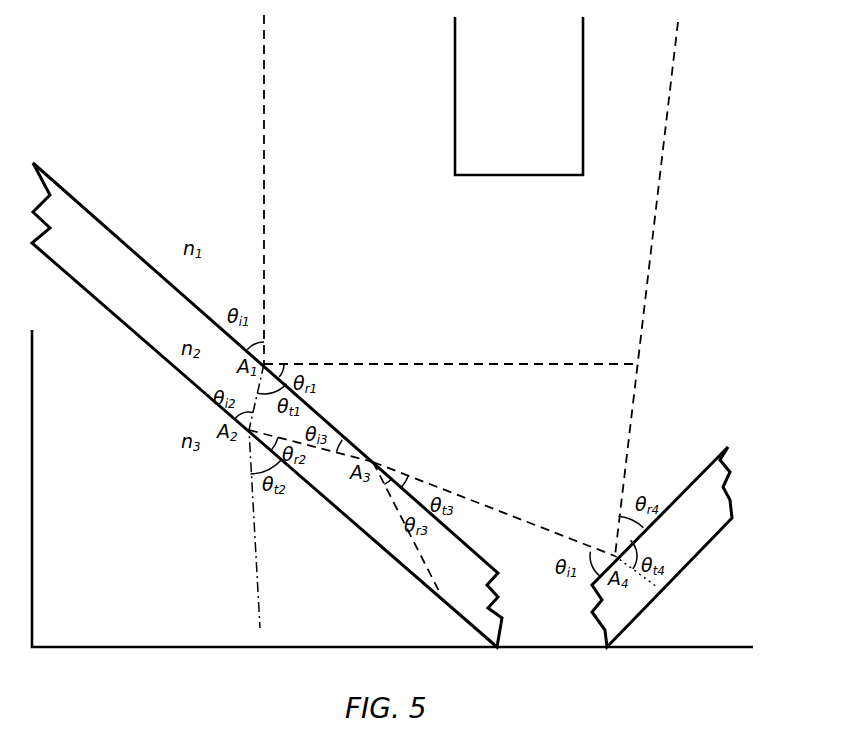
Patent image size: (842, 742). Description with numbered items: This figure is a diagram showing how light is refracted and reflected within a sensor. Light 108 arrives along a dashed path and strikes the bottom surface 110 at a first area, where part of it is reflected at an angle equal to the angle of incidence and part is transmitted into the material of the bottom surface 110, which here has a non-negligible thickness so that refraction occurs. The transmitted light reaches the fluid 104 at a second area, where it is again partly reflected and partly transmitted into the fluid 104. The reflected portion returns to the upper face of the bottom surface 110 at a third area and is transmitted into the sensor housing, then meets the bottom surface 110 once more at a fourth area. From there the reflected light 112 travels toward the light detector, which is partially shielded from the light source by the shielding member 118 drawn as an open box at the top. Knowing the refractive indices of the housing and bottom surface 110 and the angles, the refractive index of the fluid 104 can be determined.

The fluid 104 is at (75, 361).
The light 108 is at (264, 108).
The bottom surface 110 is at (162, 358).
The reflected light 112 is at (472, 503).
The shielding member 118 is at (538, 108).